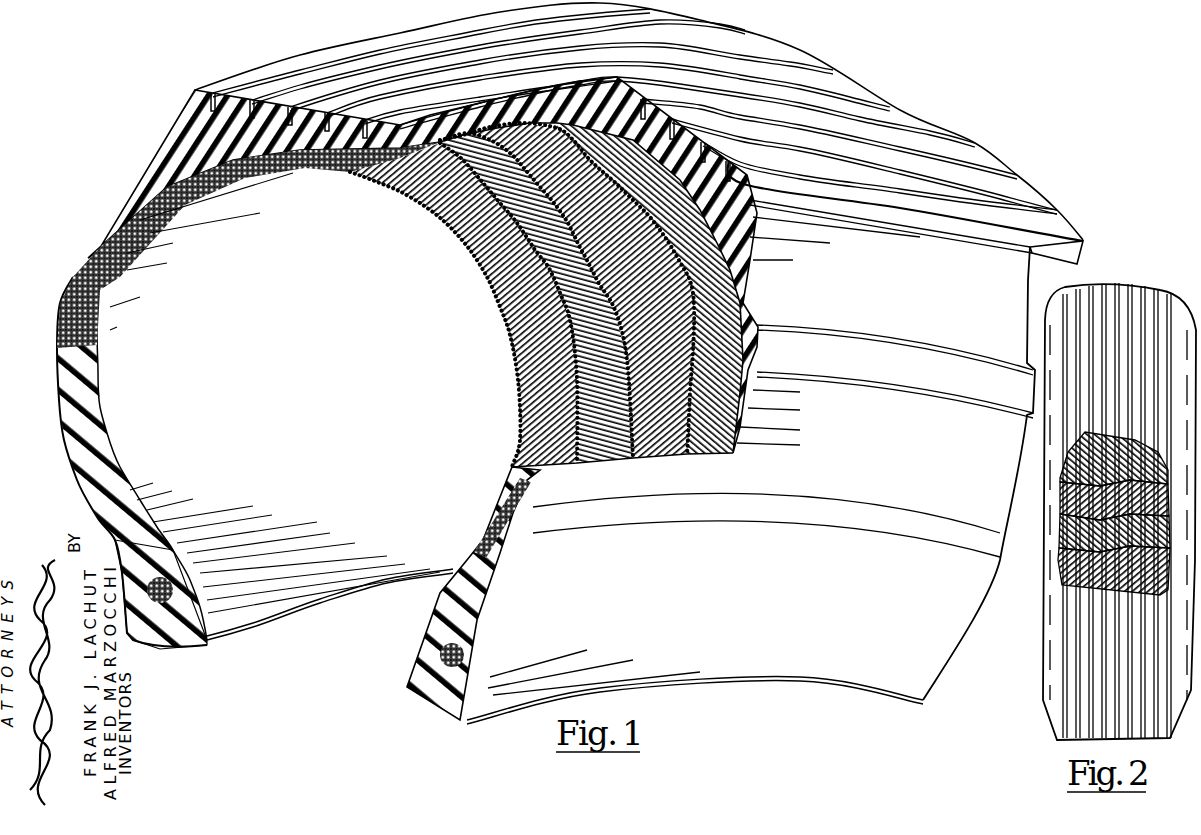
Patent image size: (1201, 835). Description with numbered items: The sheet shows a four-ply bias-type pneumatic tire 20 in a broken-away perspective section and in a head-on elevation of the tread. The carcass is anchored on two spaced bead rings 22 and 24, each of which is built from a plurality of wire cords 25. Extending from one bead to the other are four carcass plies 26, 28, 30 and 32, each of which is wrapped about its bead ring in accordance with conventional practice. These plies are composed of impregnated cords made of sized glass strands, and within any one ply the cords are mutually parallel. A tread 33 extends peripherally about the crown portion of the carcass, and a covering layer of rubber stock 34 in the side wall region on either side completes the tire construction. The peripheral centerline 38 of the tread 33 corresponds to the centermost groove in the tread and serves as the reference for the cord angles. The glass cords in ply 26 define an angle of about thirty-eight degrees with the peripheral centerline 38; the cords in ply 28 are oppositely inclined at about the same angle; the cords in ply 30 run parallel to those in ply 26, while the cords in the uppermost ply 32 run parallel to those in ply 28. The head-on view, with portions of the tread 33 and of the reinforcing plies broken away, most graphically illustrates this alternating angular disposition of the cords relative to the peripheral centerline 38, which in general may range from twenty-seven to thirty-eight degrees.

In FIG. 1, the 4-ply bias-type tire 20 is at (1000, 101).
In FIG. 2, the 4-ply bias-type tire 20 is at (1192, 400).
In FIG. 1, the bead ring 22 is at (193, 672).
In FIG. 1, the bead ring 24 is at (420, 703).
In FIG. 1, the wire cords 25 is at (160, 587).
In FIG. 1, the carcass ply 26 is at (547, 450).
In FIG. 2, the carcass ply 26 is at (1077, 578).
In FIG. 1, the carcass ply 28 is at (603, 450).
In FIG. 2, the carcass ply 28 is at (1073, 540).
In FIG. 1, the carcass ply 30 is at (657, 447).
In FIG. 2, the carcass ply 30 is at (1073, 500).
In FIG. 1, the carcass ply 32 is at (713, 440).
In FIG. 2, the carcass ply 32 is at (1082, 470).
In FIG. 1, the tread 33 is at (835, 75).
In FIG. 2, the tread 33 is at (1128, 282).
In FIG. 1, the covering layer of rubber stock 34 is at (60, 350).
In FIG. 1, the peripheral centerline 38 is at (890, 110).
In FIG. 2, the peripheral centerline 38 is at (1109, 282).